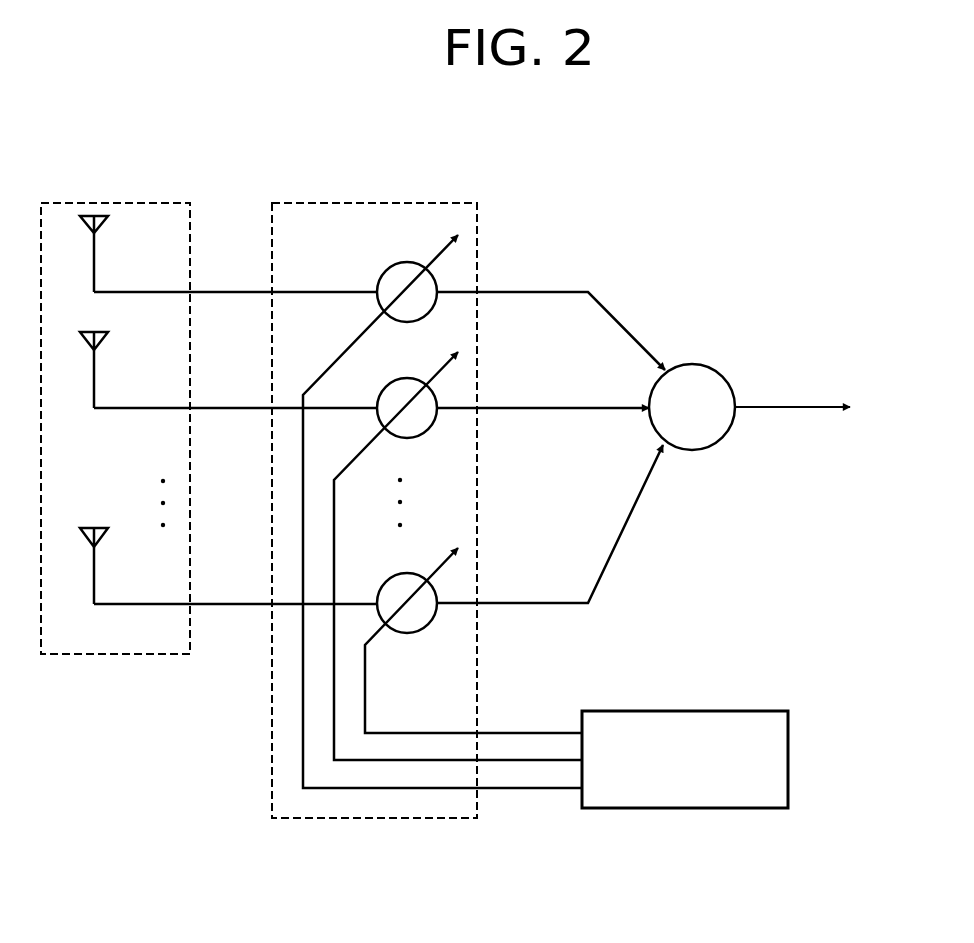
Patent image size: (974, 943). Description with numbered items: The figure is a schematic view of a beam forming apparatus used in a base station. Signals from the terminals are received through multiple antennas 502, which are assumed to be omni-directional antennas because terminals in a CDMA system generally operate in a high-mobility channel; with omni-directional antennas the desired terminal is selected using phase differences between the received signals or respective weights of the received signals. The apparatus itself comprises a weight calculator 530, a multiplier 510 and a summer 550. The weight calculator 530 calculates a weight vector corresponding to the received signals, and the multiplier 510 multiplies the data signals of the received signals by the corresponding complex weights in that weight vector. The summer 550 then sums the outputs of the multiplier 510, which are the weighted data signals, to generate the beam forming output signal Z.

The antennas 502 is at (117, 654).
The multiplier 510 is at (375, 818).
The weight calculator 530 is at (788, 757).
The summer 550 is at (715, 443).